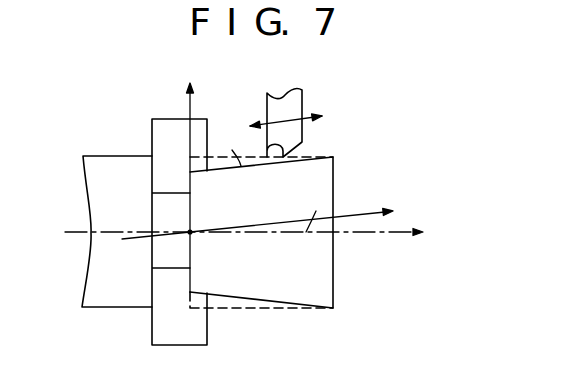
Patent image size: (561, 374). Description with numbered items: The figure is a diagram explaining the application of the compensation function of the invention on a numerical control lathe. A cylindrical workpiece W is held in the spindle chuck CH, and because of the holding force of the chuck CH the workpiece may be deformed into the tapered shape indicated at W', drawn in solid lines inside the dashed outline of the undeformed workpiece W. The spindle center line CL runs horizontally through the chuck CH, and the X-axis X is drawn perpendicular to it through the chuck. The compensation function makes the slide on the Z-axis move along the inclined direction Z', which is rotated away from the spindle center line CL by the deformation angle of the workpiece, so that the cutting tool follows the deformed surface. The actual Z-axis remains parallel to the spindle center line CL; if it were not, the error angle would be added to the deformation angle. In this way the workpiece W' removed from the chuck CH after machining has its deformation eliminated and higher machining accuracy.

The spindle chuck CH is at (152, 339).
The workpiece W is at (261, 249).
The deformed workpiece W' is at (261, 249).
The X-axis X is at (189, 175).
The compensated Z-axis direction Z' is at (268, 219).
The spindle center line CL is at (258, 235).